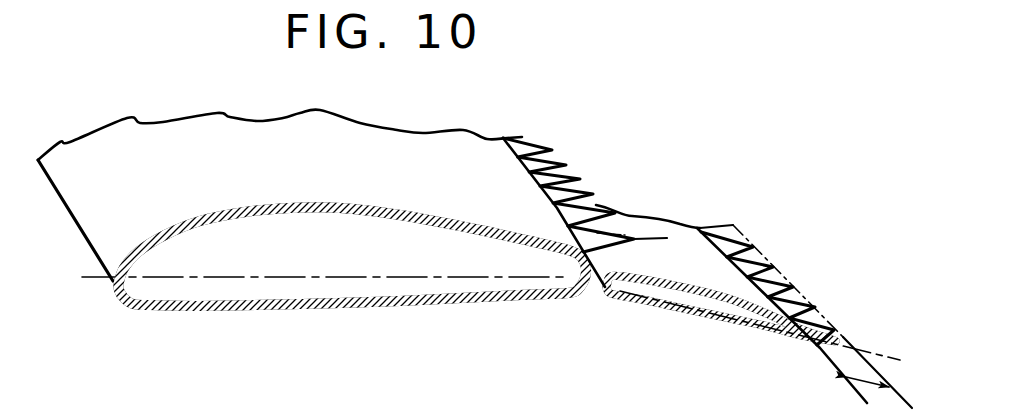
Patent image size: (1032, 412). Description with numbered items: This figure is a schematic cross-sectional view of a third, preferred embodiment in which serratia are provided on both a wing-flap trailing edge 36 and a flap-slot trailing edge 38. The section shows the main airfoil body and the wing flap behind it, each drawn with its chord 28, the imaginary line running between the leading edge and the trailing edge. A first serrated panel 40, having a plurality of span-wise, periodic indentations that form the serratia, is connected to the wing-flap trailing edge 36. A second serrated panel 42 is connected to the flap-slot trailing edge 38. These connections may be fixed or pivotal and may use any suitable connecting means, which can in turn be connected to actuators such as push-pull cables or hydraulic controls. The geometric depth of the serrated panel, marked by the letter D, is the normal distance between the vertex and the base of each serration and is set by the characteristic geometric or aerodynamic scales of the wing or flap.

The chord 28 is at (230, 277).
The wing-flap trailing edge 36 is at (711, 225).
The flap-slot trailing edge 38 is at (514, 150).
The first serrated panel 40 is at (739, 207).
The second serrated panel 42 is at (569, 137).